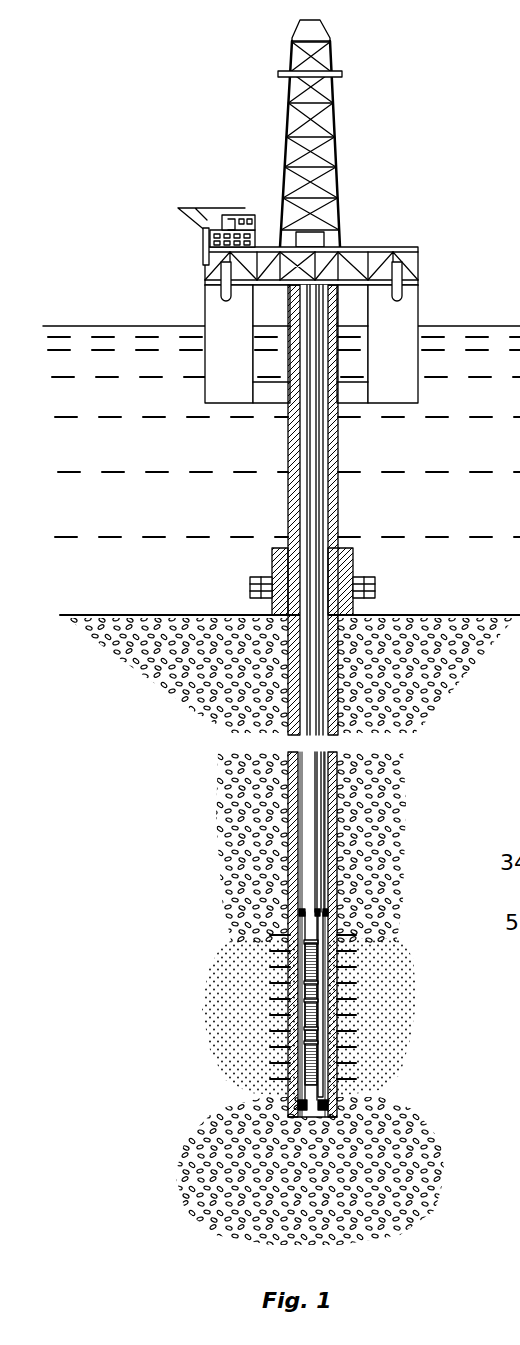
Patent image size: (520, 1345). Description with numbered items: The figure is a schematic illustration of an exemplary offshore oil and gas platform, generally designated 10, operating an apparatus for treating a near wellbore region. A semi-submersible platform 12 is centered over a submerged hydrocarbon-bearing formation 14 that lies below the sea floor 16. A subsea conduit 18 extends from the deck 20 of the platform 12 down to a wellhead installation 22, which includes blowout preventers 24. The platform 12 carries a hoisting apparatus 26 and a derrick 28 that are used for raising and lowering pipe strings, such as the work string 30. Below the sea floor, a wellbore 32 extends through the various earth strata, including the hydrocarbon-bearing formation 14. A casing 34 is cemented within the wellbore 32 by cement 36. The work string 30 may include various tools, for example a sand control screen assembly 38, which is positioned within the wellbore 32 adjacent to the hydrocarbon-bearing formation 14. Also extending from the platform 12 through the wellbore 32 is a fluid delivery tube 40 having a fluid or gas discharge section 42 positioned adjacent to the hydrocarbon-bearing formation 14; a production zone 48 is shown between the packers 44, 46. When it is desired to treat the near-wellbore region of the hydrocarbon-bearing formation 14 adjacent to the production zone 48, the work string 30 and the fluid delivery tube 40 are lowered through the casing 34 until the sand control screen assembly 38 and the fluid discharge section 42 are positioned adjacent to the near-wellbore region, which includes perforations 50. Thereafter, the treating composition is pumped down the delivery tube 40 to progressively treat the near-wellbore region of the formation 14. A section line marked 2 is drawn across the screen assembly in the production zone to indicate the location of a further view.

The offshore oil and gas platform 10 is at (180, 109).
The semi-submersible platform 12 is at (418, 250).
The hydrocarbon-bearing formation 14 is at (212, 982).
The sea floor 16 is at (514, 620).
The subsea conduit 18 is at (292, 503).
The deck 20 is at (400, 285).
The wellhead installation 22 is at (272, 563).
The blowout preventers 24 is at (375, 586).
The hoisting apparatus 26 is at (312, 232).
The derrick 28 is at (333, 58).
The work string 30 is at (318, 510).
The wellbore 32 is at (338, 810).
The casing 34 is at (300, 821).
The cement 36 is at (338, 840).
The sand control screen assembly 38 is at (307, 1023).
The fluid delivery tube 40 is at (322, 866).
The fluid discharge section 42 is at (320, 1090).
The packer 44 is at (338, 912).
The packer 46 is at (332, 1103).
The production zone 48 is at (338, 935).
The perforations 50 is at (290, 1078).
The section line 2 is at (335, 998).